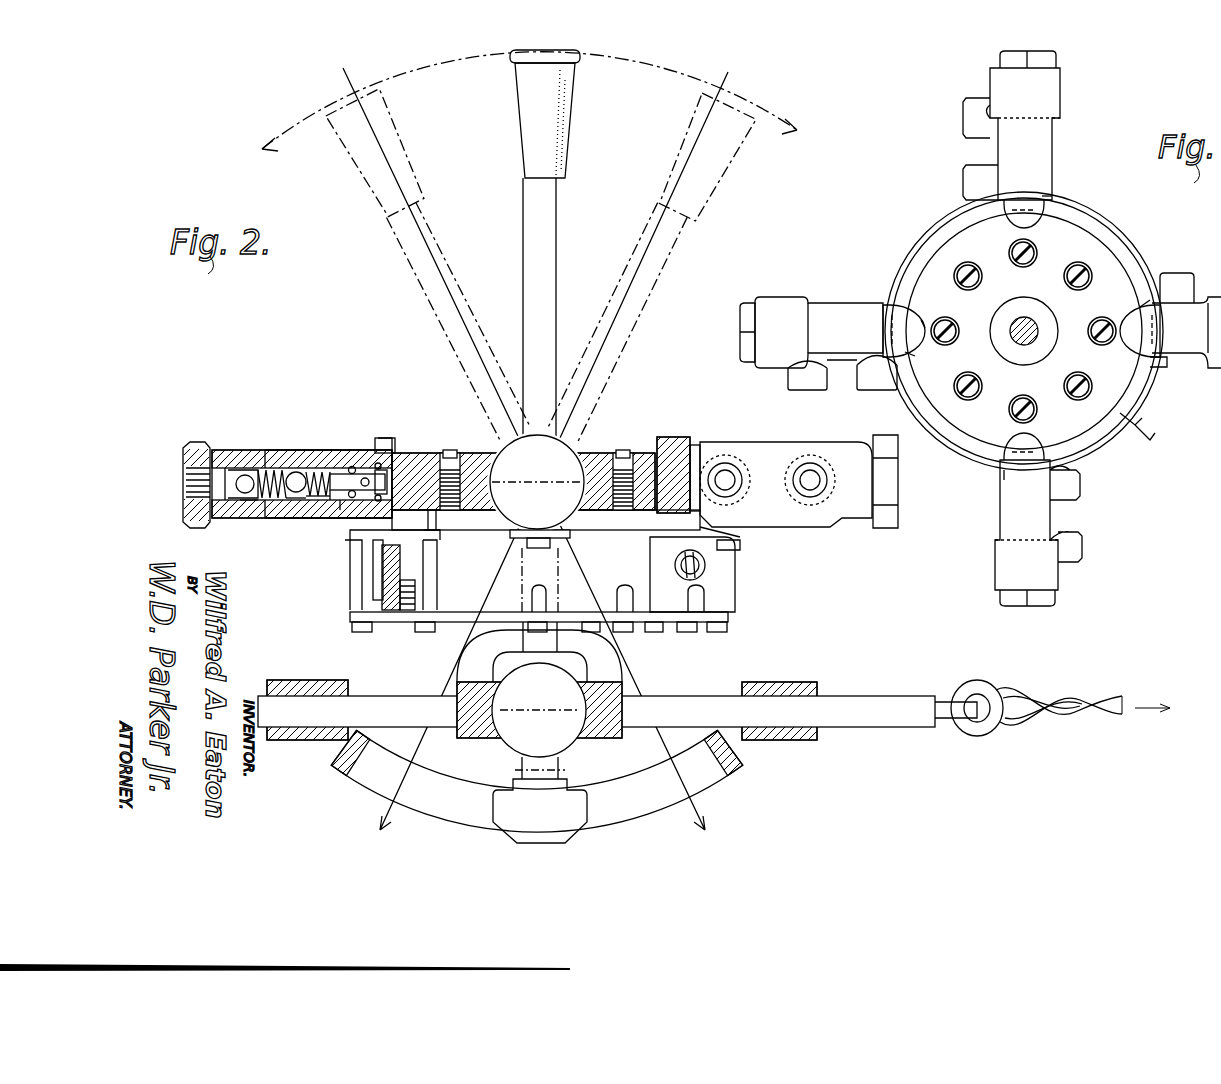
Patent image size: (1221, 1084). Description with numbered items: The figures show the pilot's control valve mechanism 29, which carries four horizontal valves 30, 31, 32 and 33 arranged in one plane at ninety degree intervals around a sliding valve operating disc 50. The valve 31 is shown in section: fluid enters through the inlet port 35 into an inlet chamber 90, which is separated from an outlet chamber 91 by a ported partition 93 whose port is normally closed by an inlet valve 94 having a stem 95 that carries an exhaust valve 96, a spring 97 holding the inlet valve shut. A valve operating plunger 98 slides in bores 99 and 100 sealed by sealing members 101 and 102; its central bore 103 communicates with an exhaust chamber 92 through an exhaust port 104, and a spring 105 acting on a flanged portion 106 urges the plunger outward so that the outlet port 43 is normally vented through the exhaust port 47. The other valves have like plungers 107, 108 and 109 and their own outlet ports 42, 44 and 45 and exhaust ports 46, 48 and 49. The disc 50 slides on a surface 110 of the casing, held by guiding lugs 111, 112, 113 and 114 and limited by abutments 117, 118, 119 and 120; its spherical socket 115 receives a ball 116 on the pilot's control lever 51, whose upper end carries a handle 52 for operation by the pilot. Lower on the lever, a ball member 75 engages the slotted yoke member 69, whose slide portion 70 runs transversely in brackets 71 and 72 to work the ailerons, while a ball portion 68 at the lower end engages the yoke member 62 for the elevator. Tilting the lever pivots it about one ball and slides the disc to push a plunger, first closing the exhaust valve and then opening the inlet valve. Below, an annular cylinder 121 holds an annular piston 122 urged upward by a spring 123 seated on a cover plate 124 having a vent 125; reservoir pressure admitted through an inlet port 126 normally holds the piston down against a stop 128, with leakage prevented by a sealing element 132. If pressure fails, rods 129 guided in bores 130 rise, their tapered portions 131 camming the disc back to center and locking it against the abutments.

In FIG. 2, the pilot's control valve mechanism 29 is at (855, 525).
In FIG. 3, the valve 30 is at (995, 576).
In FIG. 2, the valve 31 is at (308, 464).
In FIG. 3, the valve 31 is at (792, 300).
In FIG. 3, the valve 32 is at (1060, 95).
In FIG. 2, the valve 33 is at (762, 455).
In FIG. 2, the inlet port 35 is at (192, 468).
In FIG. 3, the outlet port 42 is at (1072, 560).
In FIG. 3, the outlet port 43 is at (806, 390).
In FIG. 3, the outlet port 44 is at (965, 118).
In FIG. 2, the outlet port 45 is at (812, 476).
In FIG. 3, the exhaust port 46 is at (1078, 488).
In FIG. 3, the exhaust port 47 is at (876, 390).
In FIG. 3, the exhaust port 48 is at (965, 182).
In FIG. 2, the exhaust port 49 is at (727, 476).
In FIG. 3, the exhaust port 49 is at (1178, 276).
In FIG. 2, the valve operating member or disc 50 is at (592, 470).
In FIG. 3, the valve operating member or disc 50 is at (1088, 254).
In FIG. 2, the pilot's control element or lever 51 is at (557, 250).
In FIG. 3, the pilot's control element or lever 51 is at (1036, 342).
In FIG. 2, the lever knob 52 is at (560, 170).
In FIG. 2, the yoke member 62 is at (748, 765).
In FIG. 2, the ball portion 68 is at (500, 800).
In FIG. 2, the yoke member 69 is at (615, 652).
In FIG. 2, the slide portion 70 is at (860, 697).
In FIG. 2, the bracket 71 is at (305, 682).
In FIG. 2, the bracket 72 is at (790, 683).
In FIG. 2, the ball member 75 is at (512, 740).
In FIG. 2, the inlet chamber 90 is at (238, 460).
In FIG. 2, the outlet chamber 91 is at (338, 474).
In FIG. 2, the exhaust chamber 92 is at (362, 478).
In FIG. 2, the ported partition 93 is at (246, 475).
In FIG. 2, the inlet valve 94 is at (250, 468).
In FIG. 2, the stem 95 is at (270, 482).
In FIG. 2, the exhaust valve 96 is at (318, 486).
In FIG. 2, the spring 97 is at (298, 472).
In FIG. 2, the valve operating plunger 98 is at (392, 448).
In FIG. 3, the valve operating plunger 98 is at (905, 318).
In FIG. 2, the bore 99 is at (353, 468).
In FIG. 2, the bore 100 is at (380, 468).
In FIG. 2, the sealing member 101 is at (330, 500).
In FIG. 2, the sealing member 102 is at (380, 466).
In FIG. 2, the bore 103 is at (322, 505).
In FIG. 2, the exhaust port 104 is at (345, 502).
In FIG. 2, the spring 105 is at (300, 502).
In FIG. 2, the flanged portion 106 is at (310, 505).
In FIG. 3, the valve operating plunger 107 is at (1032, 447).
In FIG. 3, the valve operating plunger 108 is at (1030, 210).
In FIG. 2, the valve operating plunger 109 is at (695, 445).
In FIG. 3, the valve operating plunger 109 is at (1158, 368).
In FIG. 2, the surface 110 is at (742, 536).
In FIG. 3, the guiding lug 111 is at (1012, 448).
In FIG. 2, the guiding lug 112 is at (395, 445).
In FIG. 3, the guiding lug 112 is at (917, 342).
In FIG. 3, the guiding lug 113 is at (1045, 202).
In FIG. 2, the guiding lug 114 is at (672, 438).
In FIG. 3, the guiding lug 114 is at (1135, 332).
In FIG. 2, the spherically formed socket 115 is at (578, 462).
In FIG. 2, the ball 116 is at (565, 448).
In FIG. 3, the abutment 117 is at (1065, 470).
In FIG. 3, the abutment 118 is at (912, 356).
In FIG. 3, the abutment 119 is at (1053, 210).
In FIG. 3, the abutment 120 is at (1142, 320).
In FIG. 2, the annular cylinder 121 is at (373, 560).
In FIG. 2, the annular piston 122 is at (378, 575).
In FIG. 2, the spring 123 is at (420, 622).
In FIG. 2, the cover plate 124 is at (728, 617).
In FIG. 2, the vent 125 is at (362, 624).
In FIG. 2, the inlet port 126 is at (706, 565).
In FIG. 2, the stop 128 is at (405, 606).
In FIG. 2, the rod 129 is at (418, 575).
In FIG. 2, the bore 130 is at (412, 560).
In FIG. 2, the tapered portion 131 is at (405, 548).
In FIG. 2, the sealing element 132 is at (430, 590).